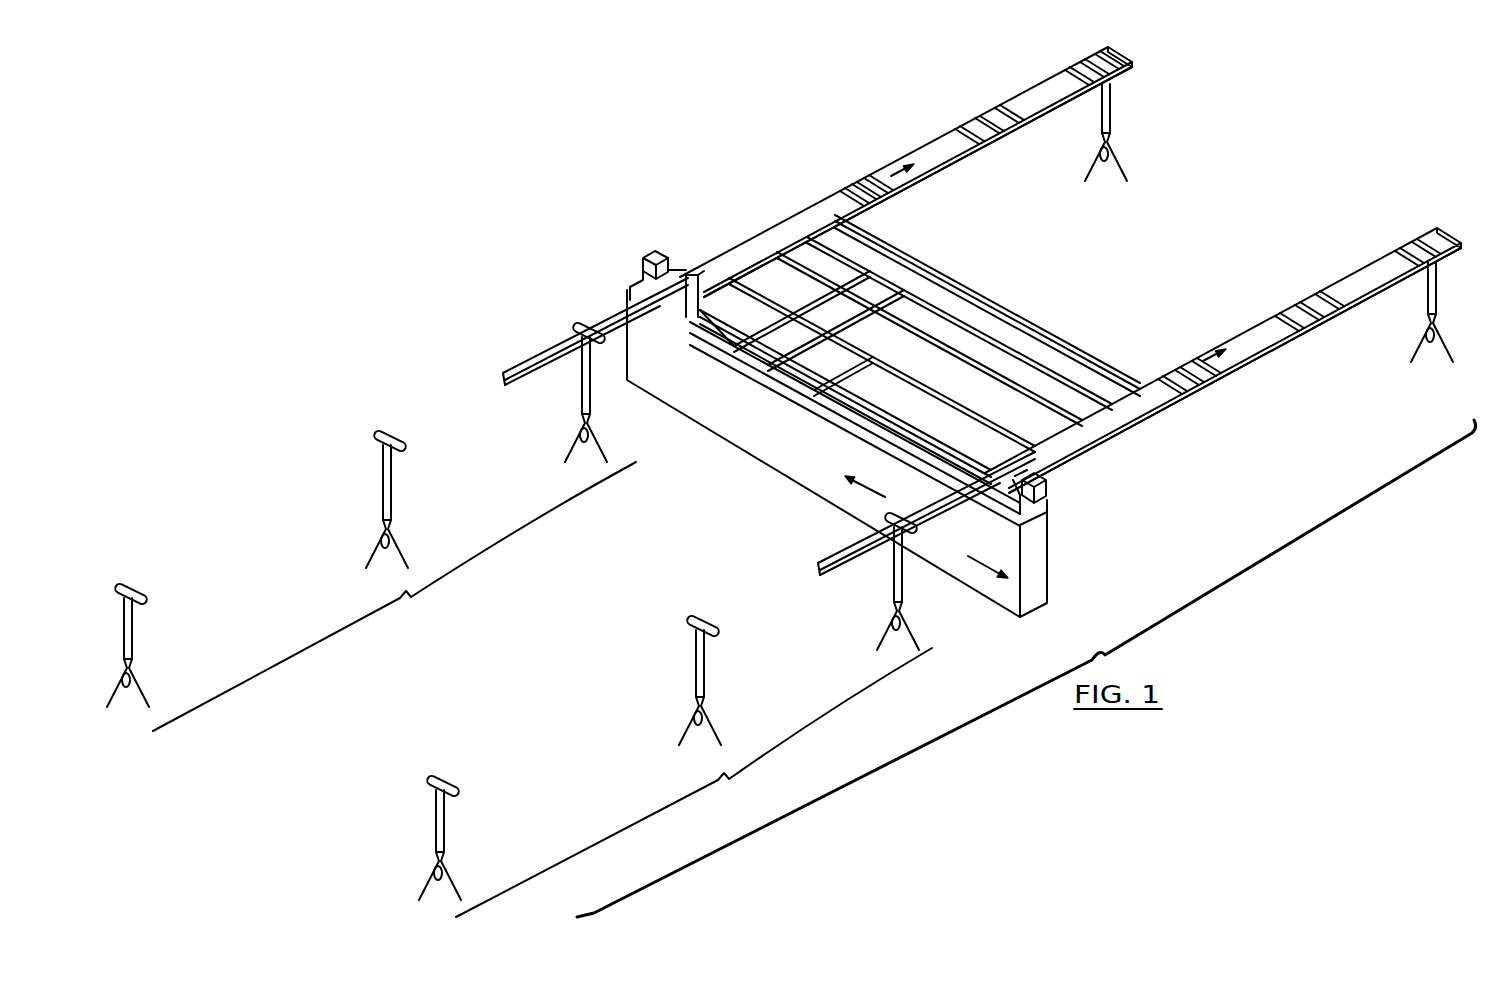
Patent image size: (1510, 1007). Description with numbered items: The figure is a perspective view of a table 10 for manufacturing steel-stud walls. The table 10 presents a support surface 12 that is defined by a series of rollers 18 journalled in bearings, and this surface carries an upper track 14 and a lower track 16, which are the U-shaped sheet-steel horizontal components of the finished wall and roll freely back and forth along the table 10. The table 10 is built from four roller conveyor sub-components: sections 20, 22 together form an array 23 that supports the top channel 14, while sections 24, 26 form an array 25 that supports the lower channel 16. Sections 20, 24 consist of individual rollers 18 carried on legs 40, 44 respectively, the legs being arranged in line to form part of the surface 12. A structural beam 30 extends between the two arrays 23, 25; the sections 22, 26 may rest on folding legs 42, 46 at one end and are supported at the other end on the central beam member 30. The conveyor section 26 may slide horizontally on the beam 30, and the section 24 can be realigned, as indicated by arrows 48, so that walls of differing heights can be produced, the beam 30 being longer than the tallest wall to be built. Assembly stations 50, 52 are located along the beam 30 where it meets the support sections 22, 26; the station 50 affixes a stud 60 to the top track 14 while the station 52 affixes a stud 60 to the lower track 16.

The table 10 is at (780, 139).
The support surface 12 is at (930, 138).
The upper track 14 is at (506, 385).
The lower track 16 is at (818, 575).
The rollers 18 is at (577, 333).
The roller conveyor section 20 is at (394, 596).
The roller conveyor section 22 is at (1034, 120).
The roller array 23 is at (683, 247).
The roller conveyor section 24 is at (694, 782).
The roller array 25 is at (1050, 467).
The roller conveyor section 26 is at (1322, 330).
The structural beam 30 is at (752, 440).
The legs 40 is at (132, 622).
The folding legs 42 is at (1110, 122).
The legs 44 is at (445, 835).
The folding legs 46 is at (1437, 305).
The arrows 48 is at (866, 489).
The assembly station 50 is at (643, 258).
The assembly station 52 is at (1050, 495).
The stud 60 is at (1010, 300).